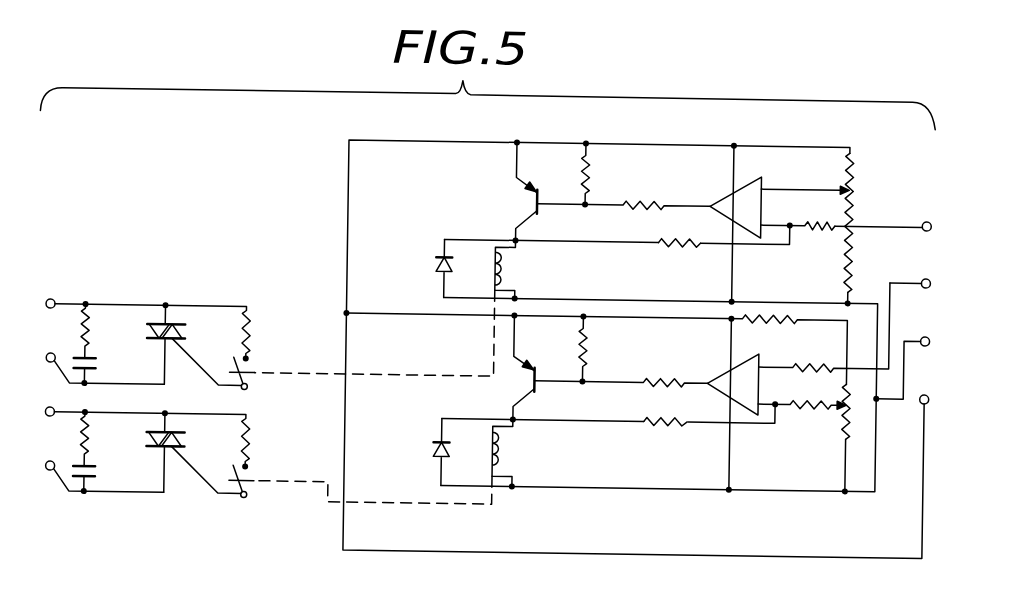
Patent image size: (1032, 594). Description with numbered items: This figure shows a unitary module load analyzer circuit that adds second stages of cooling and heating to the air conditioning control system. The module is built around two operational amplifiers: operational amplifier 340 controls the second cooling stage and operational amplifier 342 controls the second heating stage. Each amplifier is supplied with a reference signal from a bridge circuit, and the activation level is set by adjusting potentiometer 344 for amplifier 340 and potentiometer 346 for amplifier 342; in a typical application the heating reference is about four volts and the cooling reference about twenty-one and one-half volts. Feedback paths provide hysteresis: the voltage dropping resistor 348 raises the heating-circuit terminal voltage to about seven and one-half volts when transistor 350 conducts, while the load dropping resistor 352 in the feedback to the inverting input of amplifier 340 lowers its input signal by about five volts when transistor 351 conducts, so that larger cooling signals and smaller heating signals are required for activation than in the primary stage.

The operational amplifier 340 is at (730, 195).
The operational amplifier 342 is at (731, 371).
The potentiometer 344 is at (852, 170).
The potentiometer 346 is at (850, 414).
The voltage dropping resistor 348 is at (654, 420).
The transistor 350 is at (536, 378).
The transistor 351 is at (536, 201).
The load dropping resistor 352 is at (674, 240).